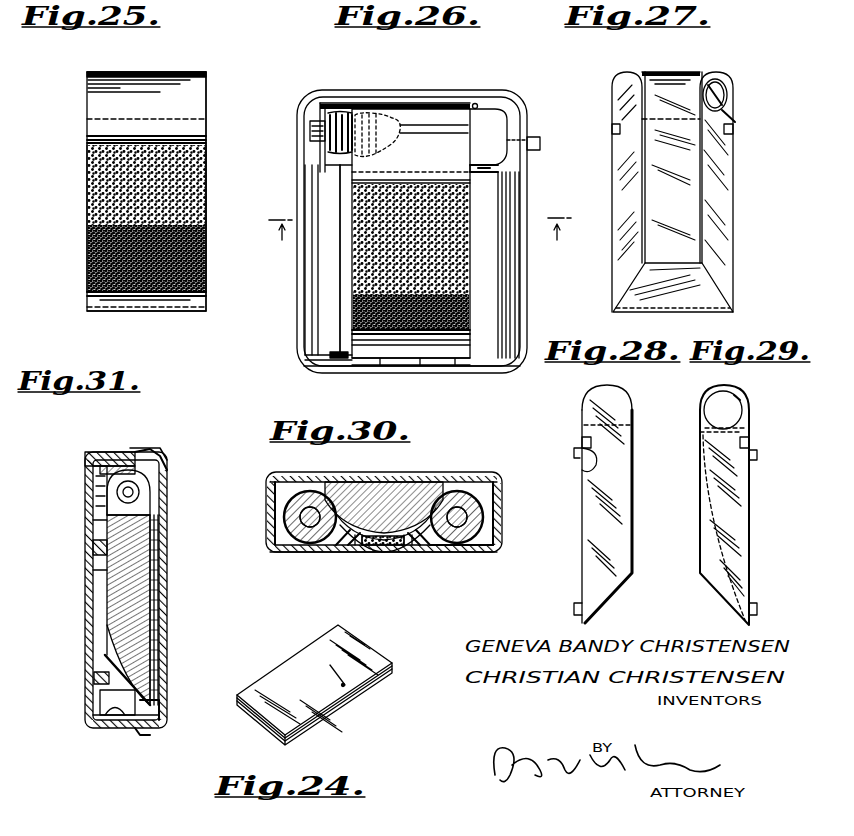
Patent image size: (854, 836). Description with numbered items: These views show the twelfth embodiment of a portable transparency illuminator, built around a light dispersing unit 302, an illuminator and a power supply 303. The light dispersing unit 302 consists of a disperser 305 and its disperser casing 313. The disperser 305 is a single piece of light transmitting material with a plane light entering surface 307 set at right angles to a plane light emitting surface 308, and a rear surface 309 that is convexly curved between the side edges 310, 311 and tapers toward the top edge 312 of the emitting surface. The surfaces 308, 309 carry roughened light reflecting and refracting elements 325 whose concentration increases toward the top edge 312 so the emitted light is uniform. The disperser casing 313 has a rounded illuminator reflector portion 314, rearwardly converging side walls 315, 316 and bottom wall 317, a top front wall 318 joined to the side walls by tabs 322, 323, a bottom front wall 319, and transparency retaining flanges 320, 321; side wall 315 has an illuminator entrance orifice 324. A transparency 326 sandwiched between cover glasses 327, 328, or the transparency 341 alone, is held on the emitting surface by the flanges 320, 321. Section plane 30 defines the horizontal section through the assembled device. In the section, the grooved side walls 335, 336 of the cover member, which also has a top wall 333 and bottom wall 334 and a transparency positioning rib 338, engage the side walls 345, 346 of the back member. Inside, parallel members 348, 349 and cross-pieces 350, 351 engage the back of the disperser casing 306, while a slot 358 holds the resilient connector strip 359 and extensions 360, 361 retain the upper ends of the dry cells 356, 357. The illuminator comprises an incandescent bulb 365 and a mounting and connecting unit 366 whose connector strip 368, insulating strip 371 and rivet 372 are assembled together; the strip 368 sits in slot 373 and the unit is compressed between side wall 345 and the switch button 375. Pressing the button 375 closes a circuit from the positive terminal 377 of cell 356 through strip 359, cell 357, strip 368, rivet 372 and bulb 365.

In FIG. 25, the light dispersing unit 302 is at (195, 100).
In FIG. 26, the power supply 303 is at (325, 296).
In FIG. 26, the disperser 305 is at (405, 232).
In FIG. 30, the disperser casing 306 is at (358, 555).
In FIG. 29, the light entering surface 307 is at (745, 432).
In FIG. 31, the light entering surface 307 is at (130, 505).
In FIG. 25, the light emitting surface 308 is at (120, 185).
In FIG. 31, the light emitting surface 308 is at (152, 635).
In FIG. 30, the light emitting surface 308 is at (385, 482).
In FIG. 31, the rear surface 309 is at (120, 655).
In FIG. 30, the rear surface 309 is at (382, 545).
In FIG. 25, the side edge 310 is at (87, 218).
In FIG. 25, the side edge 311 is at (206, 218).
In FIG. 25, the top edge 312 is at (168, 311).
In FIG. 25, the disperser casing 313 is at (87, 107).
In FIG. 27, the disperser casing 313 is at (690, 245).
In FIG. 28, the disperser casing 313 is at (618, 497).
In FIG. 29, the disperser casing 313 is at (712, 503).
In FIG. 31, the disperser casing 313 is at (105, 583).
In FIG. 25, the illuminator reflector portion 314 is at (170, 48).
In FIG. 27, the illuminator reflector portion 314 is at (655, 72).
In FIG. 28, the illuminator reflector portion 314 is at (612, 385).
In FIG. 27, the side wall 315 is at (718, 175).
In FIG. 29, the side wall 315 is at (740, 540).
In FIG. 27, the side wall 316 is at (627, 175).
In FIG. 28, the side wall 316 is at (618, 560).
In FIG. 27, the bottom wall 317 is at (690, 288).
In FIG. 25, the top front wall 318 is at (130, 125).
In FIG. 28, the top front wall 318 is at (583, 428).
In FIG. 29, the top front wall 318 is at (752, 428).
In FIG. 25, the bottom front wall 319 is at (87, 308).
In FIG. 25, the transparency retaining flange 320 is at (87, 143).
In FIG. 28, the transparency retaining flange 320 is at (578, 448).
In FIG. 29, the transparency retaining flange 320 is at (757, 455).
In FIG. 25, the transparency retaining flange 321 is at (87, 298).
In FIG. 28, the transparency retaining flange 321 is at (574, 608).
In FIG. 29, the transparency retaining flange 321 is at (757, 607).
In FIG. 27, the tab 322 is at (735, 128).
In FIG. 29, the tab 322 is at (740, 443).
In FIG. 27, the tab 323 is at (612, 128).
In FIG. 28, the tab 323 is at (578, 457).
In FIG. 27, the illuminator entrance orifice 324 is at (725, 78).
In FIG. 29, the illuminator entrance orifice 324 is at (740, 392).
In FIG. 25, the light reflecting and refracting elements 325 is at (108, 252).
In FIG. 26, the light reflecting and refracting elements 325 is at (428, 218).
In FIG. 24, the transparency 326 is at (392, 668).
In FIG. 24, the cover glass 327 is at (352, 652).
In FIG. 24, the cover glass 328 is at (330, 725).
In FIG. 26, the section plane 30 is at (420, 241).
In FIG. 31, the top wall 333 is at (140, 450).
In FIG. 31, the bottom wall 334 is at (140, 732).
In FIG. 30, the side wall 335 is at (268, 496).
In FIG. 30, the side wall 336 is at (502, 493).
In FIG. 30, the transparency positioning rib 338 is at (318, 472).
In FIG. 31, the transparency 341 is at (158, 672).
In FIG. 30, the transparency 341 is at (410, 482).
In FIG. 24, the transparency 341 is at (358, 689).
In FIG. 26, the side wall 345 is at (305, 287).
In FIG. 30, the side wall 345 is at (275, 530).
In FIG. 26, the side wall 346 is at (515, 335).
In FIG. 30, the side wall 346 is at (500, 528).
In FIG. 30, the longitudinal member 348 is at (350, 555).
In FIG. 31, the longitudinal member 349 is at (108, 700).
In FIG. 30, the longitudinal member 349 is at (420, 553).
In FIG. 31, the cross-piece 350 is at (97, 550).
In FIG. 30, the cross-piece 350 is at (400, 553).
In FIG. 31, the cross-piece 351 is at (92, 682).
In FIG. 26, the dry cell 356 is at (320, 323).
In FIG. 26, the dry cell 357 is at (506, 316).
In FIG. 26, the slot 358 is at (378, 365).
In FIG. 26, the resilient connector strip 359 is at (412, 366).
In FIG. 31, the resilient connector strip 359 is at (103, 730).
In FIG. 26, the extension 360 is at (320, 160).
In FIG. 30, the extension 360 is at (275, 553).
In FIG. 26, the extension 361 is at (495, 176).
In FIG. 30, the extension 361 is at (495, 553).
In FIG. 26, the incandescent bulb 365 is at (400, 135).
In FIG. 26, the mounting and connecting unit 366 is at (327, 110).
In FIG. 26, the connector strip 368 is at (475, 104).
In FIG. 31, the connector strip 368 is at (102, 474).
In FIG. 26, the insulating strip 371 is at (325, 143).
In FIG. 26, the rivet 372 is at (310, 127).
In FIG. 26, the slot 373 is at (398, 100).
In FIG. 31, the slot 373 is at (150, 458).
In FIG. 26, the switch button 375 is at (540, 143).
In FIG. 26, the positive terminal 377 is at (352, 360).